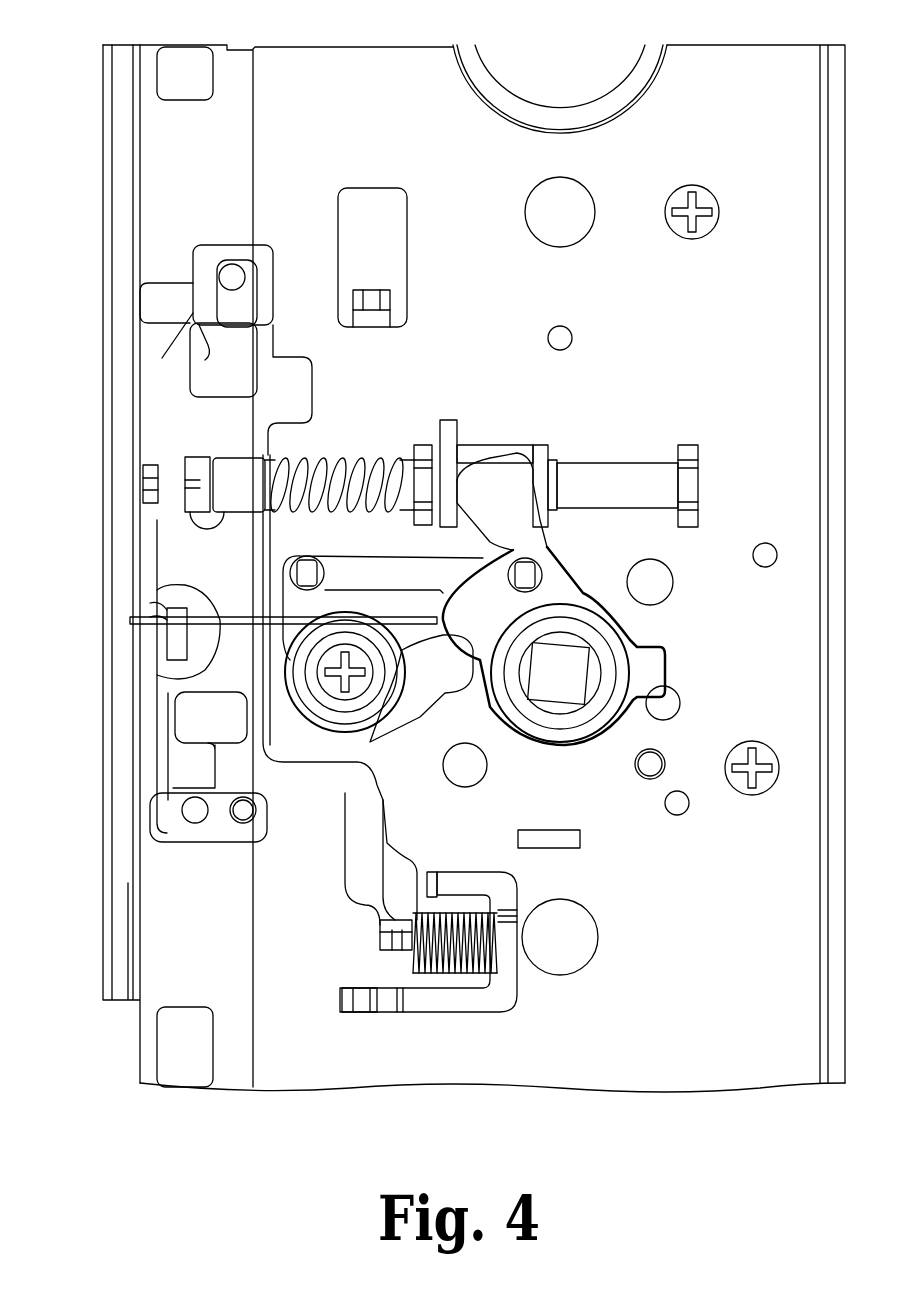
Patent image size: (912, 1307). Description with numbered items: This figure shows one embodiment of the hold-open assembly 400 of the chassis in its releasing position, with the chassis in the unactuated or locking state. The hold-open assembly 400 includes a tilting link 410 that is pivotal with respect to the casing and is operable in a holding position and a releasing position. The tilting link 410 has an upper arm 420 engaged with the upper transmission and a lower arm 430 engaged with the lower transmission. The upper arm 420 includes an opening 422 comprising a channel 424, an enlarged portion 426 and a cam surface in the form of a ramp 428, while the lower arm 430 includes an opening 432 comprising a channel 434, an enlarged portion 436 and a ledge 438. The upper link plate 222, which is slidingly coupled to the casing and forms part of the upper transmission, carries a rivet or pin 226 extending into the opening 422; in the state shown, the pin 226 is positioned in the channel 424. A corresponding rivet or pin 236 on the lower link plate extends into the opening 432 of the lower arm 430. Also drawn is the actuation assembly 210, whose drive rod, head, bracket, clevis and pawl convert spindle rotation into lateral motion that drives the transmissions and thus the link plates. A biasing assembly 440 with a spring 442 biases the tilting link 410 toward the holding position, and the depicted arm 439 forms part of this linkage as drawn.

The actuation assembly 210 is at (580, 424).
The upper link plate 222 is at (254, 50).
The pin 226 is at (232, 277).
The pin 236 is at (198, 812).
The hold-open assembly 400 is at (434, 374).
The tilting link 410 is at (157, 547).
The upper arm 420 is at (148, 400).
The opening 422 is at (239, 409).
The channel 424 is at (272, 297).
The enlarged portion 426 is at (274, 372).
The ramp 428 is at (190, 358).
The lower arm 430 is at (148, 697).
The opening 432 is at (225, 686).
The channel 434 is at (220, 777).
The enlarged portion 436 is at (264, 711).
The ledge 438 is at (241, 744).
The arm 439 is at (383, 845).
The biasing assembly 440 is at (530, 876).
The spring 442 is at (460, 973).